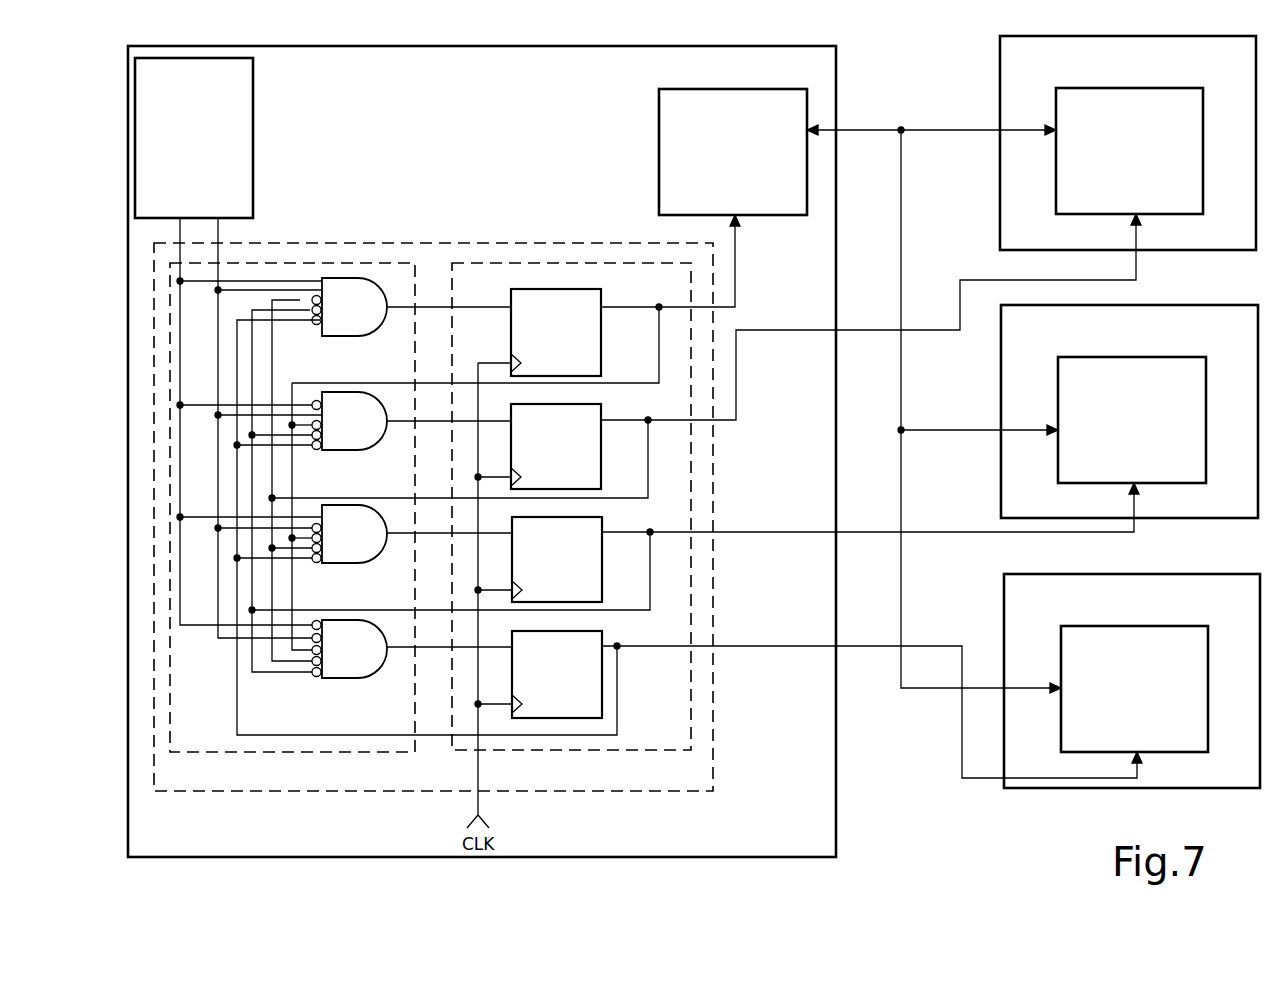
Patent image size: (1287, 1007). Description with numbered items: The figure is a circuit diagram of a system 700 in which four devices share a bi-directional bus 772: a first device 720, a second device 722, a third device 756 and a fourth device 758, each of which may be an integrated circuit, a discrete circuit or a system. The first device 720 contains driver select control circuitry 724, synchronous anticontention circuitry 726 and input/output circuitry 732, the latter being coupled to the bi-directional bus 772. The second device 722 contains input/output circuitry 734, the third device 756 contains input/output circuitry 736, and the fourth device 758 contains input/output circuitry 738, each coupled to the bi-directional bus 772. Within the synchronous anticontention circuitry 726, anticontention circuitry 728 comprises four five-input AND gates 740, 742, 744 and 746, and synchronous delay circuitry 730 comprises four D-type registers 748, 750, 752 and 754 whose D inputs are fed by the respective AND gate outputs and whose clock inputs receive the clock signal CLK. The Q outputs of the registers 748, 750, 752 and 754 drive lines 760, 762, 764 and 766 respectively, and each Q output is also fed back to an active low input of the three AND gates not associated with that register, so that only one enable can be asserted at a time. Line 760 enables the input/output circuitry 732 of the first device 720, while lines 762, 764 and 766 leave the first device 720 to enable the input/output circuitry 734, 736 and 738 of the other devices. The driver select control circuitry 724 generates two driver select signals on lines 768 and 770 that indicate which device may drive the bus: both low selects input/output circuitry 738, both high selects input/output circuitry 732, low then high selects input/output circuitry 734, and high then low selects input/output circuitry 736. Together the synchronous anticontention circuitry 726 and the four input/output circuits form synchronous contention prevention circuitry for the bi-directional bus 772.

The system 700 is at (938, 797).
The first device 720 is at (810, 762).
The second device 722 is at (1240, 79).
The driver select control circuitry 724 is at (178, 210).
The synchronous anticontention circuitry 726 is at (198, 788).
The anticontention circuitry 728 is at (218, 753).
The synchronous delay circuitry 730 is at (683, 730).
The input/output circuitry 732 is at (717, 198).
The input/output circuitry 734 is at (1114, 197).
The input/output circuitry 736 is at (1116, 466).
The input/output circuitry 738 is at (1118, 735).
The five-input AND gate 740 is at (332, 317).
The five-input AND gate 742 is at (332, 431).
The five-input AND gate 744 is at (332, 543).
The five-input AND gate 746 is at (332, 657).
The D-type register 748 is at (540, 346).
The D-type register 750 is at (540, 461).
The D-type register 752 is at (541, 574).
The D-type register 754 is at (541, 688).
The third device 756 is at (1242, 348).
The fourth device 758 is at (1245, 615).
The line 760 is at (741, 282).
The line 762 is at (774, 328).
The line 764 is at (783, 530).
The line 766 is at (783, 644).
The line 768 is at (180, 354).
The line 770 is at (214, 340).
The bi-directional bus 772 is at (946, 128).